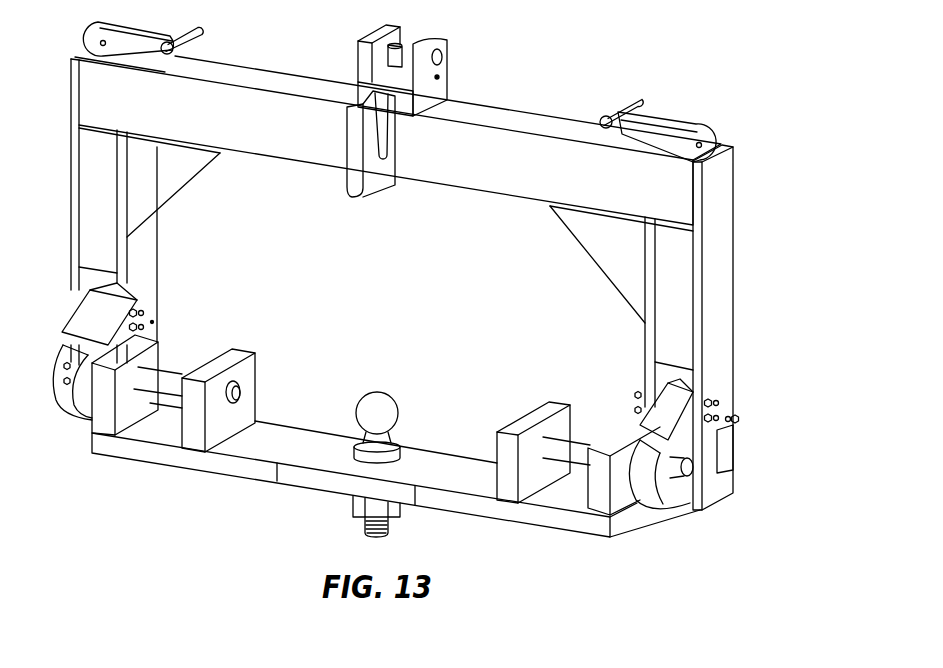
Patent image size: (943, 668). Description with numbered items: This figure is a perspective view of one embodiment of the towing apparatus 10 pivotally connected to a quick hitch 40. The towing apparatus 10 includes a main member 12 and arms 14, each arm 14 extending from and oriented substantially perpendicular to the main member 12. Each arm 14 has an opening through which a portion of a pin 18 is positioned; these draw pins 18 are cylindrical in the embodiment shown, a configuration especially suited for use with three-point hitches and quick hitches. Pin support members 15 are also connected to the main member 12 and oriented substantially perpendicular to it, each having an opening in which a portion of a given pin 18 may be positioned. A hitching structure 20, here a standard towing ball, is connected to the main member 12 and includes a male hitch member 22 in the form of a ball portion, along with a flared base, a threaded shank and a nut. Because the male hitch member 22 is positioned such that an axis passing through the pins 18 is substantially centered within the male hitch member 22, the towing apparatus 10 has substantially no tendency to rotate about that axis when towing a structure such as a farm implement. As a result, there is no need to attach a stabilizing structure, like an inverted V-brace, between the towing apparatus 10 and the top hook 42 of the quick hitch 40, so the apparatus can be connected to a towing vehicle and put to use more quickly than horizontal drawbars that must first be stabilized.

The towing apparatus 10 is at (517, 376).
The main member 12 is at (458, 473).
The arm 14 is at (100, 423).
The pin support member 15 is at (235, 423).
The pin 18 is at (241, 392).
The hitching structure 20 is at (397, 375).
The male hitch member 22 is at (357, 403).
The quick hitch 40 is at (723, 188).
The top hook 42 is at (357, 146).